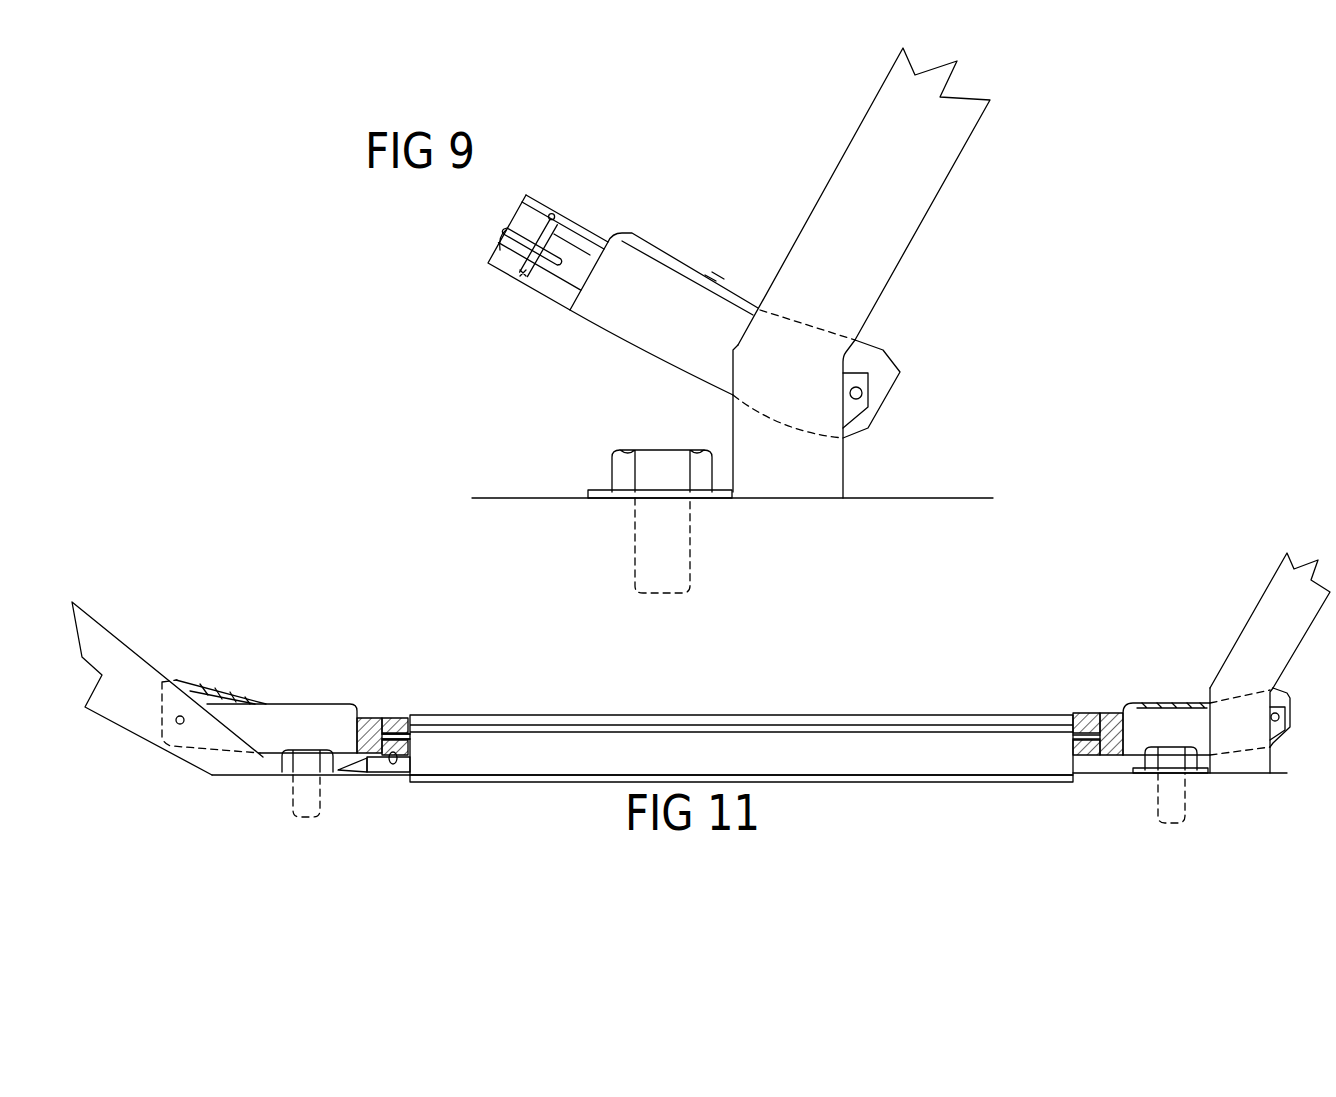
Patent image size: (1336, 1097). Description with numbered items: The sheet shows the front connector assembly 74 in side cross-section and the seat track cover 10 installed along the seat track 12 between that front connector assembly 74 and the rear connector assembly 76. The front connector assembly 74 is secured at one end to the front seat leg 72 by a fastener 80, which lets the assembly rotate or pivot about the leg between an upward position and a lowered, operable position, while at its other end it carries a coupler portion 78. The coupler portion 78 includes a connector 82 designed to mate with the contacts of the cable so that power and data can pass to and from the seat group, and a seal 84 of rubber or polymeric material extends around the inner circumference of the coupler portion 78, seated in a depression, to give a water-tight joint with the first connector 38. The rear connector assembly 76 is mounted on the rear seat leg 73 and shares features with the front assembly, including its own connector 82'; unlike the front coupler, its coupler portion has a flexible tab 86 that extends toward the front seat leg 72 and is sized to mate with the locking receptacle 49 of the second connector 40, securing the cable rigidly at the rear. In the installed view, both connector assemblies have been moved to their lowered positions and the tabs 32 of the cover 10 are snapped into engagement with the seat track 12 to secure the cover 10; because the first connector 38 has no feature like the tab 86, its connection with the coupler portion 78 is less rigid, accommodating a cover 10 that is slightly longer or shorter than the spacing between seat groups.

In FIG. 11, the seat track cover 10 is at (727, 713).
In FIG. 9, the seat track 12 is at (868, 500).
In FIG. 11, the seat track 12 is at (1240, 775).
In FIG. 11, the tabs 32 is at (463, 783).
In FIG. 11, the first connector 38 is at (1090, 752).
In FIG. 11, the second connector 40 is at (388, 717).
In FIG. 11, the locking receptacles 49 is at (377, 775).
In FIG. 9, the front seat leg 72 is at (852, 257).
In FIG. 11, the front seat leg 72 is at (1270, 628).
In FIG. 11, the rear seat leg 73 is at (132, 667).
In FIG. 9, the front connector assembly 74 is at (683, 252).
In FIG. 11, the front connector assembly 74 is at (1142, 702).
In FIG. 11, the rear connector assembly 76 is at (288, 700).
In FIG. 9, the coupler portion 78 is at (555, 212).
In FIG. 9, the fastener 80 is at (863, 387).
In FIG. 9, the connector 82 is at (496, 253).
In FIG. 11, the connector 82 is at (1064, 772).
In FIG. 11, the connector 82' is at (424, 715).
In FIG. 9, the seal 84 is at (523, 273).
In FIG. 11, the seal 84 is at (390, 716).
In FIG. 11, the tab 86 is at (357, 777).